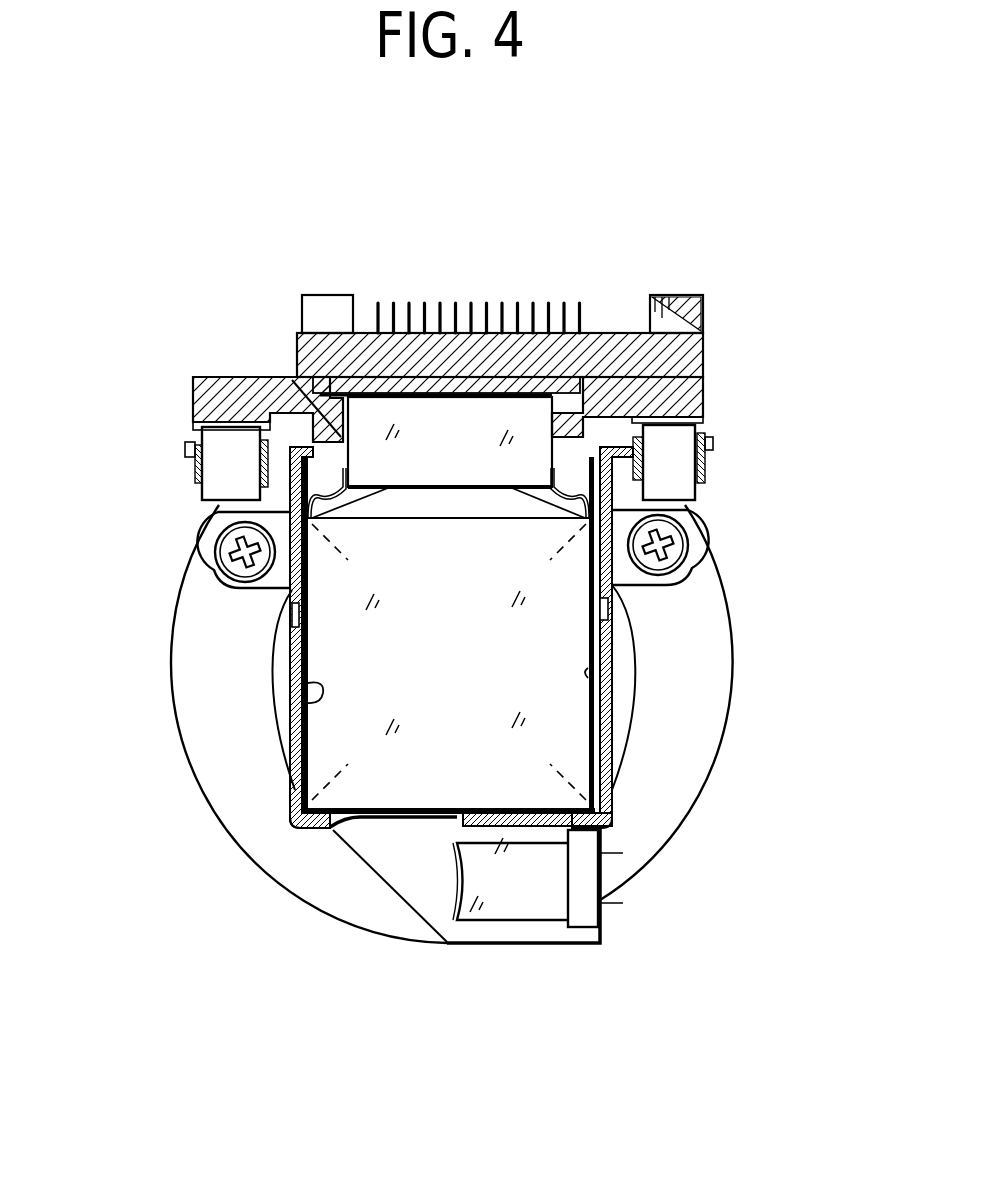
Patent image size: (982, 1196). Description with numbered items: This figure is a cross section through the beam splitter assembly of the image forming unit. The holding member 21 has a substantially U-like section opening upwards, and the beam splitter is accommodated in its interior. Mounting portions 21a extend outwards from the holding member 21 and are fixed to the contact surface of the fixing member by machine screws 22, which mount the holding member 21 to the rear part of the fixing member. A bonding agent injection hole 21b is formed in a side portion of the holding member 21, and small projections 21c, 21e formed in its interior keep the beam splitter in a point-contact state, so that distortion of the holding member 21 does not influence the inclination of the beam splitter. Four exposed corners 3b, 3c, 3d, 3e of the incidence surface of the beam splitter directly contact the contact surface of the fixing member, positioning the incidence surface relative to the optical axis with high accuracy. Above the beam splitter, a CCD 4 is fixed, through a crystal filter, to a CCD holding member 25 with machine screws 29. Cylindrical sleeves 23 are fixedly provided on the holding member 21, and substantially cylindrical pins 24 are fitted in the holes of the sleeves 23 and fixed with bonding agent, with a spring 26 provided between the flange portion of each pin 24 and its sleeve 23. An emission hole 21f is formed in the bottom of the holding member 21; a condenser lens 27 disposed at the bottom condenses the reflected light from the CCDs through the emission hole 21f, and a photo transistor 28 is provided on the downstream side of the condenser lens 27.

The CCD 4 is at (600, 333).
The machine screw 29 is at (323, 295).
The CCD holding member 25 is at (710, 388).
The spring 26 is at (192, 428).
The pin 24 is at (222, 458).
The cylindrical sleeve 23 is at (200, 475).
The mounting portion 21a is at (214, 552).
The exposed corner of incidence surface 3b is at (220, 505).
The exposed corner of incidence surface 3c is at (690, 512).
The machine screw 22 is at (240, 583).
The holding member 21 is at (608, 752).
The bonding agent injection hole 21b is at (292, 630).
The small projection 21c is at (613, 687).
The small projection 21e is at (300, 700).
The emission hole 21f is at (350, 825).
The exposed corner of incidence surface 3e is at (290, 818).
The exposed corner of incidence surface 3d is at (605, 812).
The condenser lens 27 is at (448, 905).
The photo transistor 28 is at (585, 888).